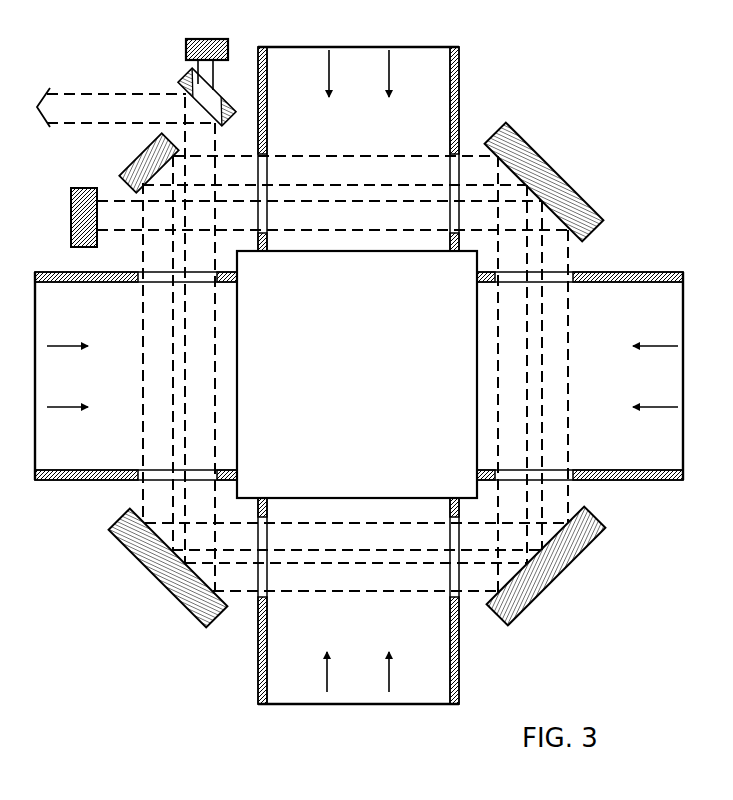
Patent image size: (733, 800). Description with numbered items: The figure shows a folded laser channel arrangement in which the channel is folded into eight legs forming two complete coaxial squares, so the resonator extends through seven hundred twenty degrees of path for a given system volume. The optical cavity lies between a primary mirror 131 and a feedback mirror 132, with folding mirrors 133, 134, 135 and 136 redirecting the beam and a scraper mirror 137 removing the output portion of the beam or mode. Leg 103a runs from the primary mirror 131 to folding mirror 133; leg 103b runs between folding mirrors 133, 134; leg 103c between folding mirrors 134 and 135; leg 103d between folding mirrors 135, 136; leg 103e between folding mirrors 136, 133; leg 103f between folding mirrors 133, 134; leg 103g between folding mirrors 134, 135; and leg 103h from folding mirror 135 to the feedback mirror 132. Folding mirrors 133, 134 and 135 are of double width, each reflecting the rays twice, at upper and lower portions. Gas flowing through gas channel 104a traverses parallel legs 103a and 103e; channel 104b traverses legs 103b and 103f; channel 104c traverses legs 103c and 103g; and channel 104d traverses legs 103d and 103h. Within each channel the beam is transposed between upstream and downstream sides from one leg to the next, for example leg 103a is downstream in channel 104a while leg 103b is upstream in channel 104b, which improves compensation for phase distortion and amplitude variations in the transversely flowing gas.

The laser channel leg 103a is at (372, 220).
The laser channel leg 103b is at (568, 384).
The laser channel leg 103c is at (383, 524).
The laser channel leg 103d is at (144, 372).
The laser channel leg 103e is at (332, 156).
The laser channel leg 103f is at (498, 372).
The laser channel leg 103g is at (372, 590).
The laser channel leg 103h is at (213, 370).
The gas channel 104a is at (356, 53).
The gas channel 104b is at (676, 457).
The gas channel 104c is at (345, 697).
The gas channel 104d is at (43, 452).
The primary mirror 131 is at (71, 221).
The feedback mirror 132 is at (195, 39).
The folding mirror 133 is at (568, 188).
The folding mirror 134 is at (569, 567).
The folding mirror 135 is at (158, 581).
The folding mirror 136 is at (140, 159).
The scraper mirror 137 is at (232, 108).